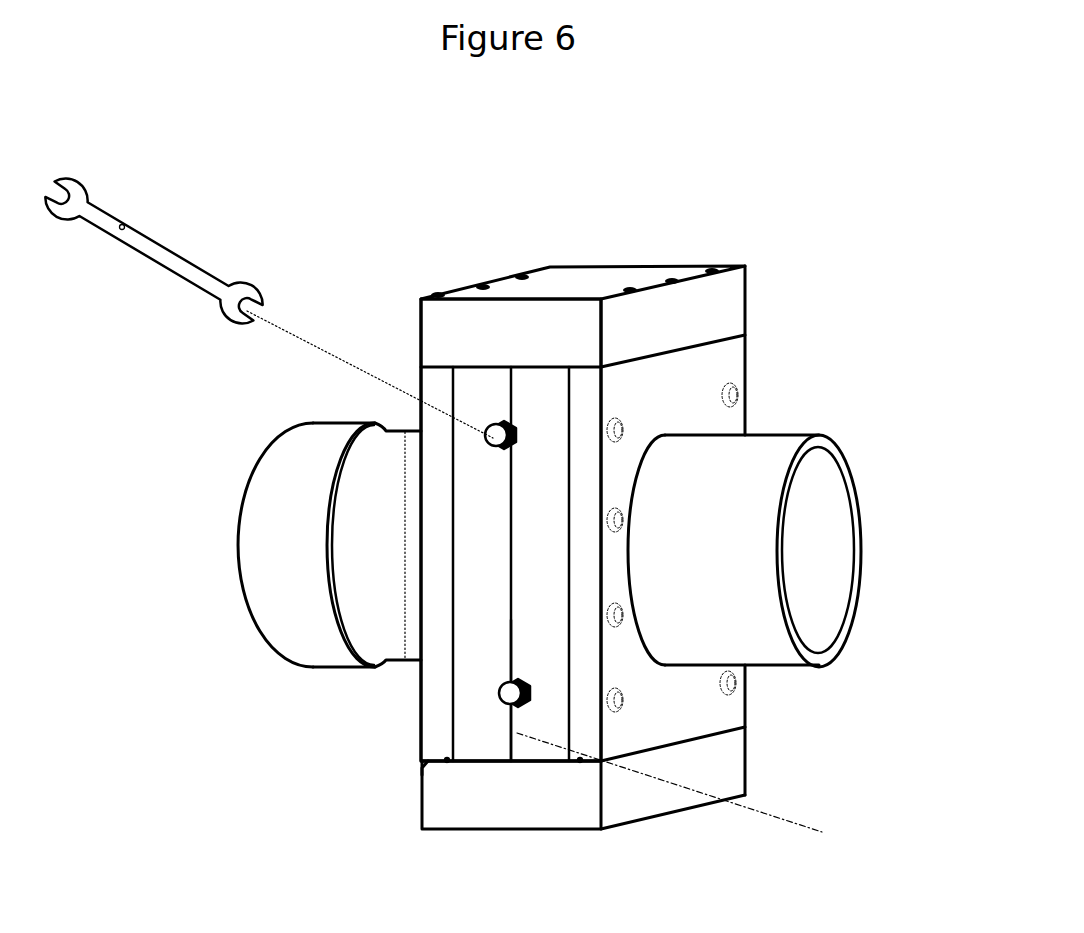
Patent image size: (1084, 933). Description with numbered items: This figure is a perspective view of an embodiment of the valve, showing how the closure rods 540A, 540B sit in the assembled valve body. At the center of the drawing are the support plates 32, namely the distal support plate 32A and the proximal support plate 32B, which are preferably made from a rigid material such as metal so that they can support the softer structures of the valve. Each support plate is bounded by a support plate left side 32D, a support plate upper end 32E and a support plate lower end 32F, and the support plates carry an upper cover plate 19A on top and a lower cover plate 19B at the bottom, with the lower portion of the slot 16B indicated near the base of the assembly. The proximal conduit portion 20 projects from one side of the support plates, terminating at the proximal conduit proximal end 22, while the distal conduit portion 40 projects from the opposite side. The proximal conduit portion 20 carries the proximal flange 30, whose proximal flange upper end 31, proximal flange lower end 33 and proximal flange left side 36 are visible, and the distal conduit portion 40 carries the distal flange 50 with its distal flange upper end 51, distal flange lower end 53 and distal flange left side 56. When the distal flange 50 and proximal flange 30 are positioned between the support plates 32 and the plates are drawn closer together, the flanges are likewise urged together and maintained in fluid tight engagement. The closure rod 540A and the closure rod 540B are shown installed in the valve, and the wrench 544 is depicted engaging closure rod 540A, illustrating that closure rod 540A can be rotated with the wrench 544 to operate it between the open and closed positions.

The lower portion of the slot 16B is at (822, 832).
The upper cover plate 19A is at (540, 268).
The lower cover plate 19B is at (682, 812).
The proximal conduit portion 20 is at (778, 435).
The proximal conduit proximal end 22 is at (850, 468).
The proximal flange 30 is at (552, 580).
The proximal flange upper end 31 is at (513, 365).
The support plates 32 is at (748, 352).
The distal support plate 32A is at (418, 527).
The proximal support plate 32B is at (703, 722).
The support plate left side 32D is at (438, 453).
The support plate upper end 32E is at (645, 352).
The support plate lower end 32F is at (423, 763).
The proximal flange lower end 33 is at (540, 763).
The proximal flange left side 36 is at (530, 647).
The distal conduit portion 40 is at (353, 570).
The distal flange 50 is at (492, 586).
The distal flange upper end 51 is at (460, 365).
The distal flange lower end 53 is at (478, 763).
The distal flange left side 56 is at (480, 699).
The closure rod 540A is at (506, 402).
The closure rod 540B is at (758, 685).
The wrench 544 is at (266, 298).